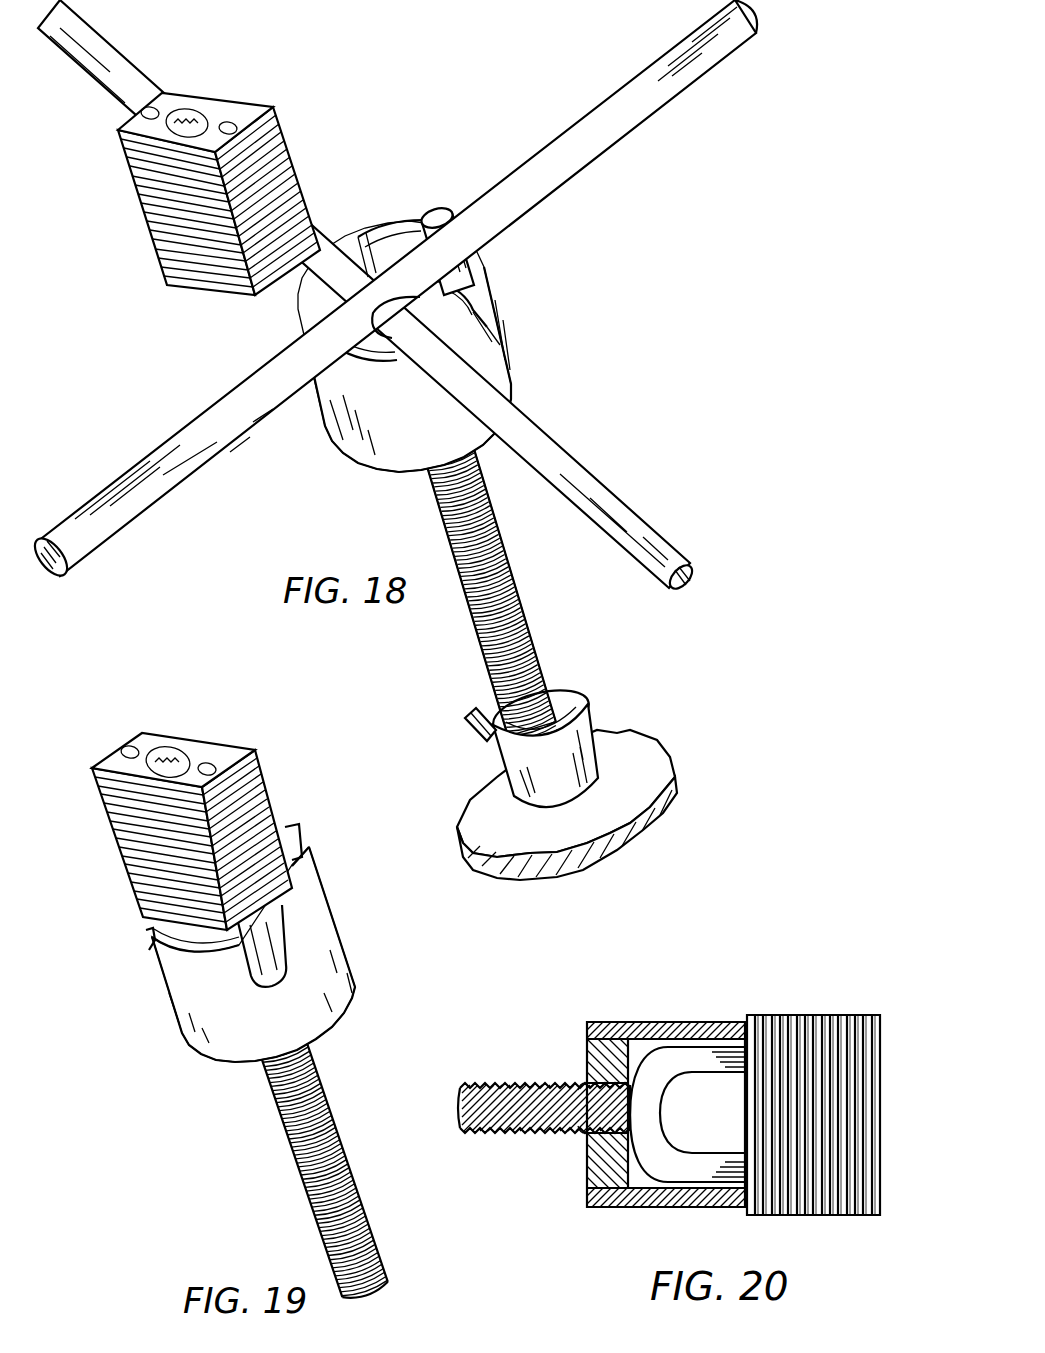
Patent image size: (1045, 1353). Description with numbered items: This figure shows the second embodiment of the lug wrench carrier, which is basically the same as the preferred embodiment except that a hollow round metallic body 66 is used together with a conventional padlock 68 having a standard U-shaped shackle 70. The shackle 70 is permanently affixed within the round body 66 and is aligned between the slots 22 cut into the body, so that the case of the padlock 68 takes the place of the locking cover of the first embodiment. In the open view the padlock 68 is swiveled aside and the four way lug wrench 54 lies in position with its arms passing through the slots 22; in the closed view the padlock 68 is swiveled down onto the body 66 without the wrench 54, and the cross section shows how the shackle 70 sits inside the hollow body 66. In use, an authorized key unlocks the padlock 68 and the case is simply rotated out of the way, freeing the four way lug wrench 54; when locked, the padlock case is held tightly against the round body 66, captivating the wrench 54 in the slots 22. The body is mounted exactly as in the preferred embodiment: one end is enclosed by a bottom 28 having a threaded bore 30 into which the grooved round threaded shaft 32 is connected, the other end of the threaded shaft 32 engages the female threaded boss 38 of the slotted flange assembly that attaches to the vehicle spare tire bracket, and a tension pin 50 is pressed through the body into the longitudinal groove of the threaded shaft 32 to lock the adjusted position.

In FIG. 18, the slots 22 is at (358, 243).
In FIG. 19, the slots 22 is at (287, 845).
In FIG. 20, the bottom 28 is at (587, 1185).
In FIG. 20, the threaded bore 30 is at (587, 1075).
In FIG. 18, the threaded shaft 32 is at (490, 660).
In FIG. 19, the threaded shaft 32 is at (283, 1142).
In FIG. 20, the threaded shaft 32 is at (472, 1085).
In FIG. 18, the threaded boss 38 is at (585, 735).
In FIG. 18, the tension pin 50 is at (468, 725).
In FIG. 18, the four way lug wrench 54 is at (614, 145).
In FIG. 18, the round metallic body 66 is at (513, 367).
In FIG. 19, the round metallic body 66 is at (172, 1043).
In FIG. 20, the round metallic body 66 is at (660, 1207).
In FIG. 18, the padlock 68 is at (277, 120).
In FIG. 19, the padlock 68 is at (152, 735).
In FIG. 20, the padlock 68 is at (832, 1015).
In FIG. 18, the U-shaped shackle 70 is at (446, 210).
In FIG. 20, the U-shaped shackle 70 is at (692, 1047).